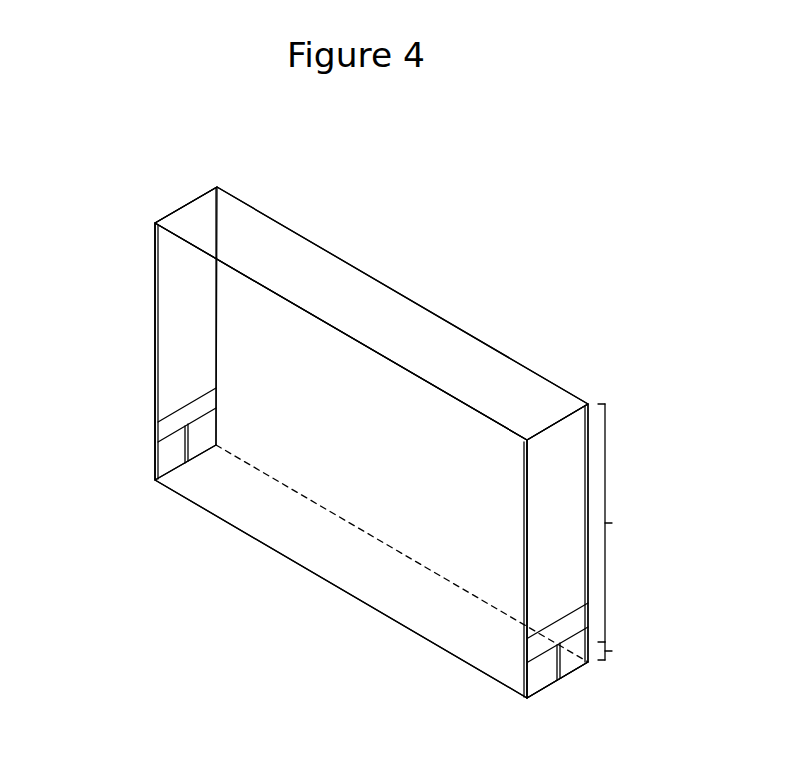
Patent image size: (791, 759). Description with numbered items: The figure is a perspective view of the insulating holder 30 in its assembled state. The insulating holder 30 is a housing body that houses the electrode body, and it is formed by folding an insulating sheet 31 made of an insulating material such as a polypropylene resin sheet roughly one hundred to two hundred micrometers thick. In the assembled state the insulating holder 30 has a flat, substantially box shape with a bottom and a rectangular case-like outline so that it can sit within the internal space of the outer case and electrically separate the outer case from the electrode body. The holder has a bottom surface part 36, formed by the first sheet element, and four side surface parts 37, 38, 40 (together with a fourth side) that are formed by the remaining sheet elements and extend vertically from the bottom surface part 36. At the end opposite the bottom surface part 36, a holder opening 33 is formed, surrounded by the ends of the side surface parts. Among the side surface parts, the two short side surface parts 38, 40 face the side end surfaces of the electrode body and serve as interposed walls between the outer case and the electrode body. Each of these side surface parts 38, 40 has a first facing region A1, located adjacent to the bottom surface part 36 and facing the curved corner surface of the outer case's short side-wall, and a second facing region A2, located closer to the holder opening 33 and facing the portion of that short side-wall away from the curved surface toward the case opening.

The insulating holder 30 is at (458, 287).
The insulating sheet 31 is at (567, 482).
The holder opening 33 is at (465, 357).
The bottom surface part 36 is at (370, 572).
The side surface part 37 is at (323, 465).
The side surface part 38 is at (568, 578).
The side surface part 40 is at (155, 307).
The first facing region A1 is at (622, 652).
The second facing region A2 is at (624, 523).